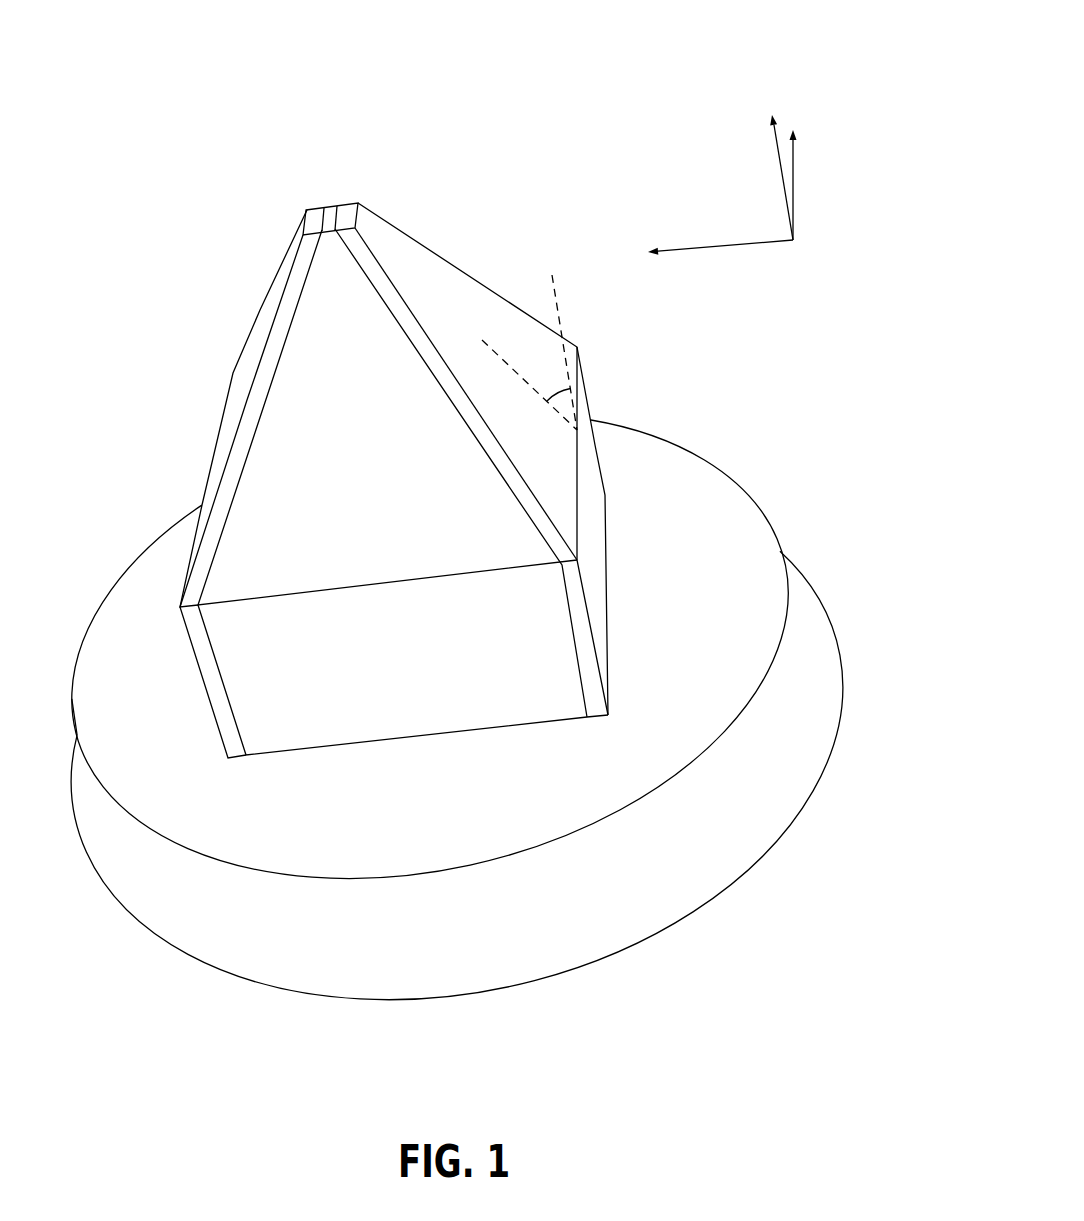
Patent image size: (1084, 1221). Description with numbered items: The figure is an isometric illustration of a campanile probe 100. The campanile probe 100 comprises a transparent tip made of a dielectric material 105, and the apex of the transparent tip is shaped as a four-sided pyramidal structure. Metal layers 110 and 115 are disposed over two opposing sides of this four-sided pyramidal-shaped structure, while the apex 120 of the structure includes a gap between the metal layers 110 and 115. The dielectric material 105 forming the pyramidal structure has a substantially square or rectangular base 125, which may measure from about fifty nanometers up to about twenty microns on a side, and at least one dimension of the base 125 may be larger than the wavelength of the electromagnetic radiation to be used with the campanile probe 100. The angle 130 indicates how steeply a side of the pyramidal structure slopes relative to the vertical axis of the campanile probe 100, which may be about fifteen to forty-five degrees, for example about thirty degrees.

The campanile probe 100 is at (638, 62).
The dielectric material 105 is at (425, 470).
The metal layer 110 is at (293, 241).
The metal layer 115 is at (405, 262).
The apex 120 is at (313, 205).
The base 125 is at (393, 702).
The angle 130 is at (552, 396).